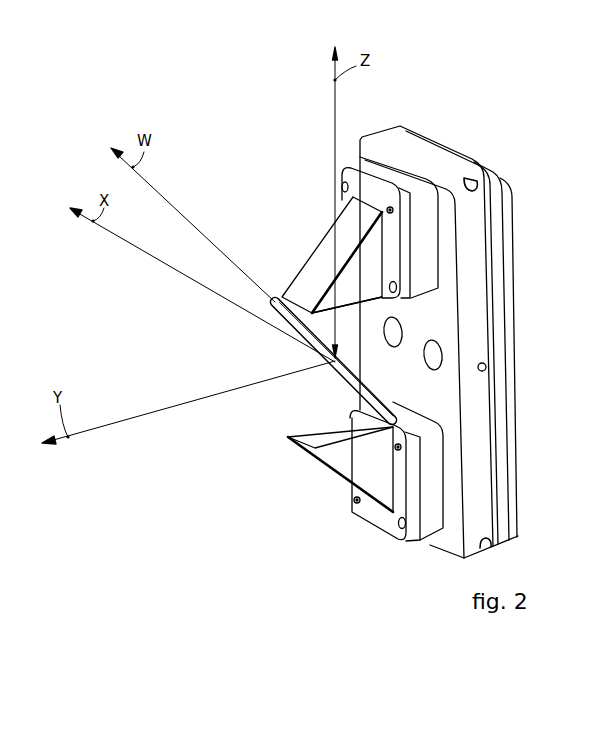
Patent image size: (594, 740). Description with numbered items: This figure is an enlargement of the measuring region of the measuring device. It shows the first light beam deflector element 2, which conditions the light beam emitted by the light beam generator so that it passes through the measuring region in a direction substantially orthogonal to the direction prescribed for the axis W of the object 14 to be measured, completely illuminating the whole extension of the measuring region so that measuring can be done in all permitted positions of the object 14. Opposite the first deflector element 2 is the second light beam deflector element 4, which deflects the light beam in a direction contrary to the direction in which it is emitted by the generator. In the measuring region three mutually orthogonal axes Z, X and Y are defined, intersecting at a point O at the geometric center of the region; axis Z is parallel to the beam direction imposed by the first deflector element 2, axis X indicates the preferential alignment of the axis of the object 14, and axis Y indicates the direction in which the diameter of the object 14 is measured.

The first light beam deflector element 2 is at (305, 288).
The second light beam deflector element 4 is at (353, 463).
The object to be measured 14 is at (330, 378).